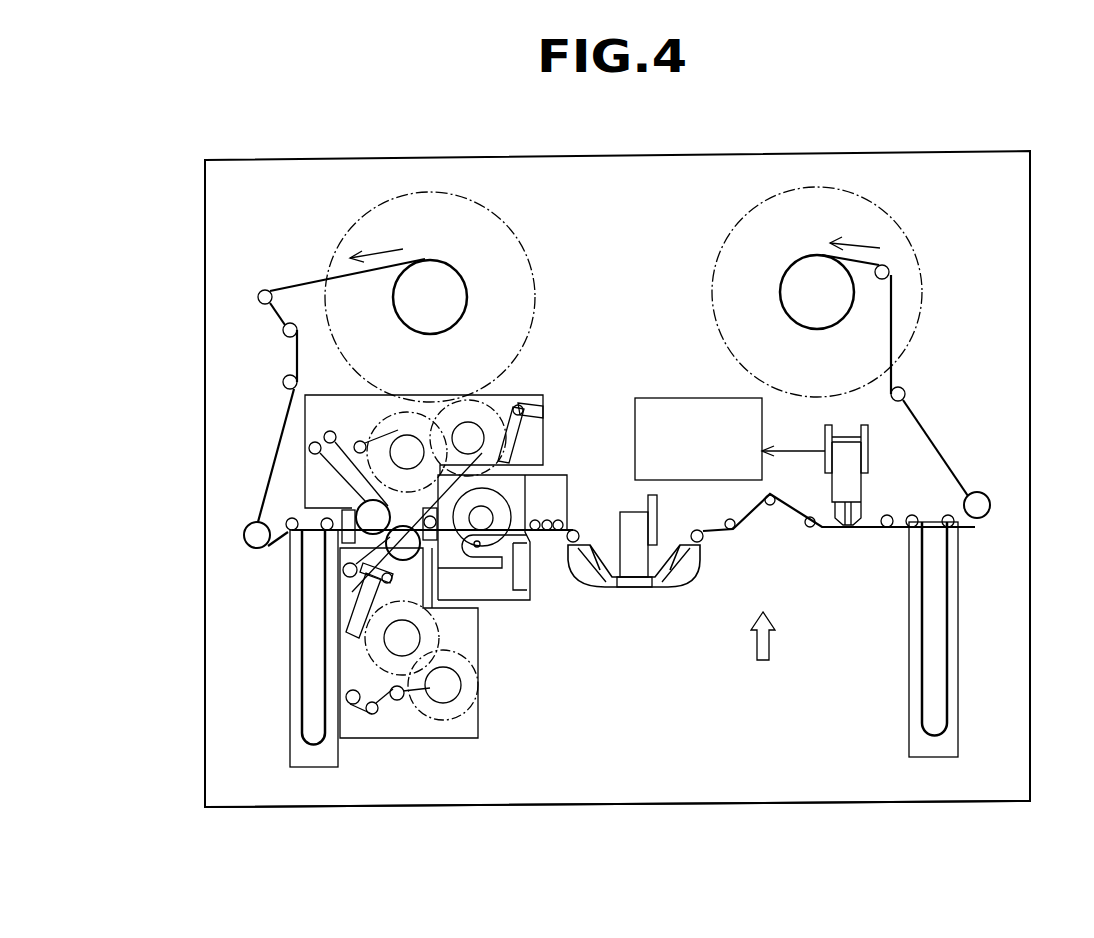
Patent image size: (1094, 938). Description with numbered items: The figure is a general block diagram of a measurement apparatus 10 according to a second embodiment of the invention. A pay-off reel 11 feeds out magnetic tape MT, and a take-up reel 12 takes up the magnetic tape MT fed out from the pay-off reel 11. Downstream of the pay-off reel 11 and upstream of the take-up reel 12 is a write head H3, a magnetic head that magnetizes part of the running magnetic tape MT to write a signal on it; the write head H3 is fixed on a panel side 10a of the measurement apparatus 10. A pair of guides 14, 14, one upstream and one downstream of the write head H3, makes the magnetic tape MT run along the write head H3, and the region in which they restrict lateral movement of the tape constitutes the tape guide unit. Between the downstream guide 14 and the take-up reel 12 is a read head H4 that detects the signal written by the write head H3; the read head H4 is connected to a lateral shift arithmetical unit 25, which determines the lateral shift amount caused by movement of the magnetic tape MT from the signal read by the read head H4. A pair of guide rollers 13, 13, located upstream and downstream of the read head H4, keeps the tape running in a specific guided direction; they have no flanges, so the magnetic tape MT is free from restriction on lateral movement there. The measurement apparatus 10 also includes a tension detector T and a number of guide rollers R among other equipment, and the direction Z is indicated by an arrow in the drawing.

The measurement apparatus 10 is at (628, 250).
The panel side 10a is at (772, 715).
The pay-off reel 11 is at (428, 287).
The take-up reel 12 is at (812, 282).
The guide rollers 13 is at (810, 530).
The guides 14 is at (593, 568).
The lateral shift arithmetical unit 25 is at (663, 398).
The write head H3 is at (630, 582).
The read head H4 is at (848, 530).
The magnetic tape MT is at (302, 282).
The guide rollers R is at (285, 333).
The tension detector T is at (280, 658).
The tape width direction Z is at (763, 654).